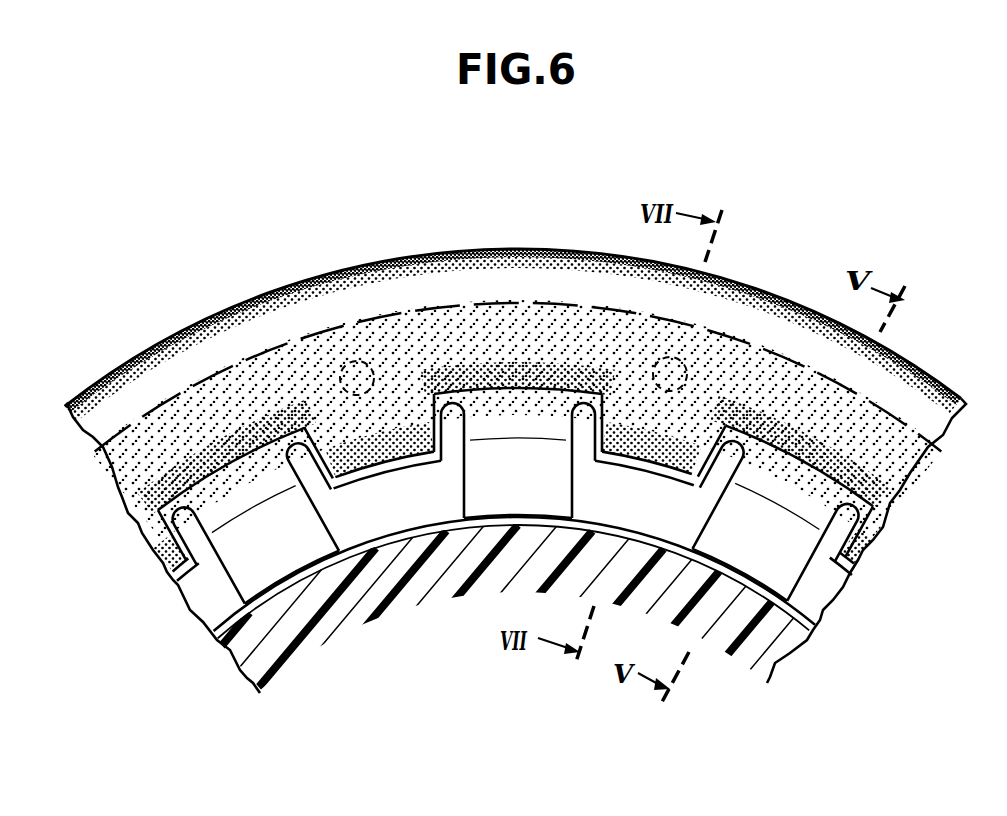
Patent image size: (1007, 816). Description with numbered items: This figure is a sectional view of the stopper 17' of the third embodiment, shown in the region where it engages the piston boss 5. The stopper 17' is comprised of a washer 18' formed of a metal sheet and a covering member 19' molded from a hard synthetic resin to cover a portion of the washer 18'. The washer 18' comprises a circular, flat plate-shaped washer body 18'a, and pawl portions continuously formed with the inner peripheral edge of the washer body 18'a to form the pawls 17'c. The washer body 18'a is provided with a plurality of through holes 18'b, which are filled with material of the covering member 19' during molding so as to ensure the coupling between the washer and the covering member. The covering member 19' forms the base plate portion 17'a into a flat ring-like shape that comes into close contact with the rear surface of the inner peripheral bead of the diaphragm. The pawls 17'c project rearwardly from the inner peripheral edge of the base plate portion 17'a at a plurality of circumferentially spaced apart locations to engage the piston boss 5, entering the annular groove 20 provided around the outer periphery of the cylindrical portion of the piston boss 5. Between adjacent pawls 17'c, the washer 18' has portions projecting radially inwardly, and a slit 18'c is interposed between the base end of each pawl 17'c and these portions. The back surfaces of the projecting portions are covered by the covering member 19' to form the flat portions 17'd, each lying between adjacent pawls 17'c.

The stopper 17' is at (516, 370).
The covering member 19' is at (513, 335).
The washer 18' is at (513, 409).
The washer body 18'a is at (518, 329).
The through holes 18'b is at (513, 356).
The slit 18'c is at (515, 504).
The pawls 17'c is at (516, 521).
The flat portions 17'd is at (514, 546).
The base plate portion 17'a is at (152, 548).
The annular groove 20 is at (399, 531).
The piston boss 5 is at (523, 567).